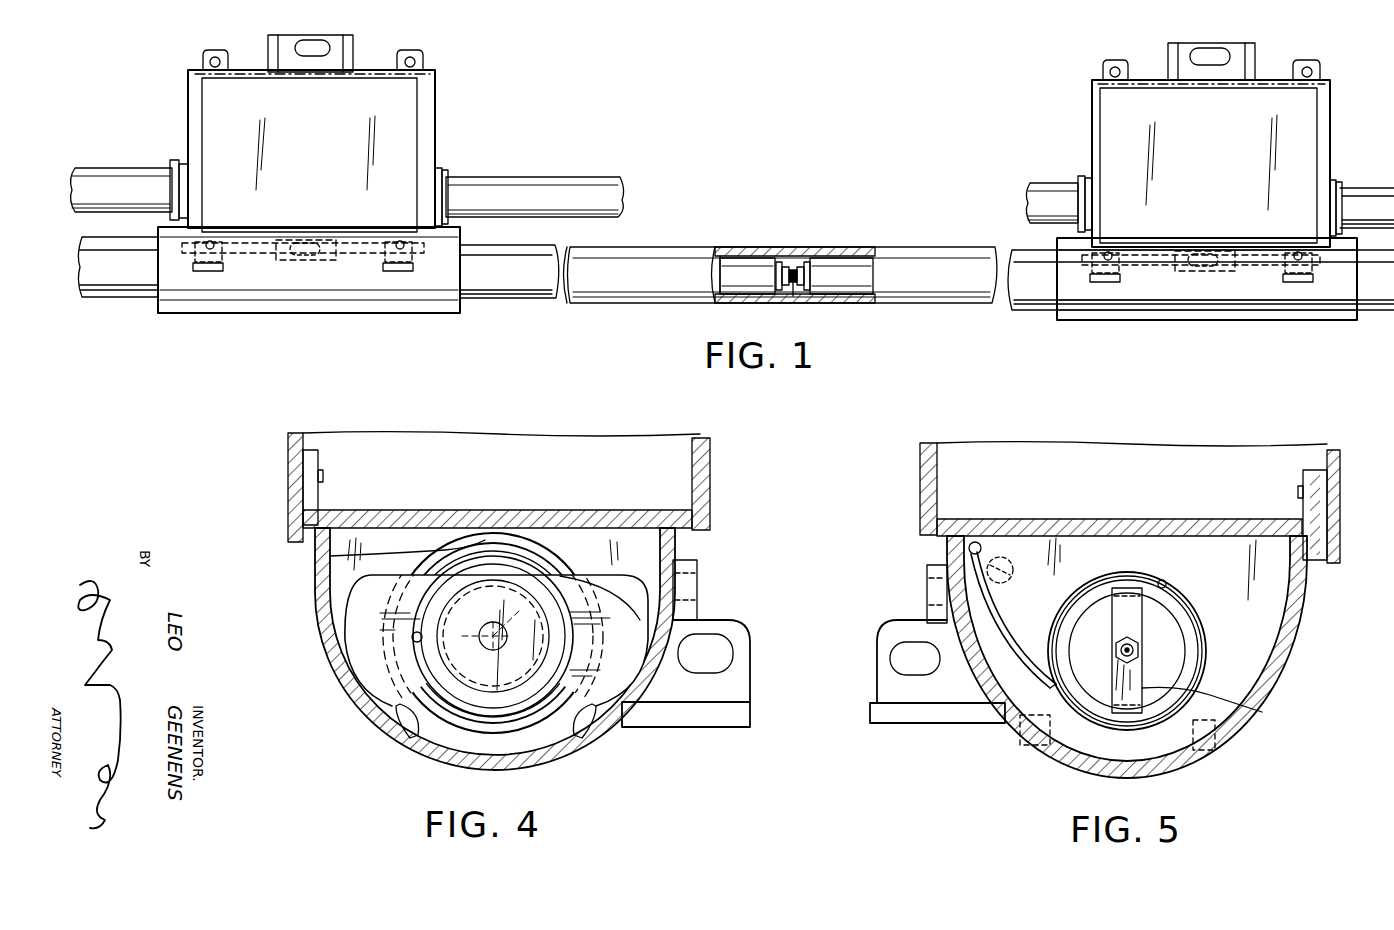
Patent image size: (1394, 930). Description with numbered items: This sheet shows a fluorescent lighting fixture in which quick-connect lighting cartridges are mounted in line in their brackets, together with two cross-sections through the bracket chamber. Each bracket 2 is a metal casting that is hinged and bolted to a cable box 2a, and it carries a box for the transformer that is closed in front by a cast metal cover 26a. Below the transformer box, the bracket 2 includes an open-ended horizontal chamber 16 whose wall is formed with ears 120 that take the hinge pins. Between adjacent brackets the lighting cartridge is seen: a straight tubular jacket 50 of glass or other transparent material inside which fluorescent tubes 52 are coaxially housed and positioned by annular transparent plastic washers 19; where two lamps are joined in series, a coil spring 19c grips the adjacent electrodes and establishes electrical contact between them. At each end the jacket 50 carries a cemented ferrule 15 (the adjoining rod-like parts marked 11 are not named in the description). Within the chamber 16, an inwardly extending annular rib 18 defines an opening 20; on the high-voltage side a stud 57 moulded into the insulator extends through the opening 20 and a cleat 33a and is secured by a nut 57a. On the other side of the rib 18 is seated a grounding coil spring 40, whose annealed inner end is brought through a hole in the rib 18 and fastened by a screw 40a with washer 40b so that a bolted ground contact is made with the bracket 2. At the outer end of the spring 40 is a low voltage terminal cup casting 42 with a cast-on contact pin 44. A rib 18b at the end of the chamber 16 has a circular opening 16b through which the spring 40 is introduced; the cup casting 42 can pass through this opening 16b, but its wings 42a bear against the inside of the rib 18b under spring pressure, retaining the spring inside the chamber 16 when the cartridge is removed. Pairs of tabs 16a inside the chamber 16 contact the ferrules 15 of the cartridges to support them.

In FIG. 1, the bracket 2 is at (186, 118).
In FIG. 4, the bracket 2 is at (343, 712).
In FIG. 5, the bracket 2 is at (1248, 746).
In FIG. 1, the cable box 2a is at (195, 72).
In FIG. 1, the rod 11 is at (115, 174).
In FIG. 1, the horizontal chamber 16 is at (250, 312).
In FIG. 1, the cast metal cover 26a is at (318, 163).
In FIG. 4, the cast metal cover 26a is at (288, 478).
In FIG. 5, the cast metal cover 26a is at (1335, 555).
In FIG. 1, the tubular jacket 50 is at (660, 247).
In FIG. 1, the fluorescent tube 52 is at (748, 258).
In FIG. 1, the annular transparent plastic washer 19 is at (792, 266).
In FIG. 1, the coil spring 19c is at (798, 268).
In FIG. 4, the rib 18b is at (380, 545).
In FIG. 4, the low voltage terminal cup casting 42 is at (486, 530).
In FIG. 4, the ferrule 15 is at (565, 568).
In FIG. 4, the circular opening 16b is at (575, 575).
In FIG. 4, the wings 42a is at (648, 586).
In FIG. 4, the grounding coil spring 40 is at (335, 560).
In FIG. 5, the grounding coil spring 40 is at (985, 607).
In FIG. 4, the contact pin 44 is at (392, 666).
In FIG. 4, the tabs 16a is at (405, 722).
In FIG. 5, the tabs 16a is at (1035, 742).
In FIG. 4, the ears 120 is at (692, 690).
In FIG. 5, the ears 120 is at (918, 705).
In FIG. 5, the screw 40a is at (1008, 560).
In FIG. 5, the washer 40b is at (1053, 686).
In FIG. 5, the opening 20 is at (1160, 618).
In FIG. 5, the stud 57 is at (1140, 648).
In FIG. 5, the nut 57a is at (1135, 655).
In FIG. 5, the cleat 33a is at (1262, 712).
In FIG. 5, the annular rib 18 is at (1265, 584).